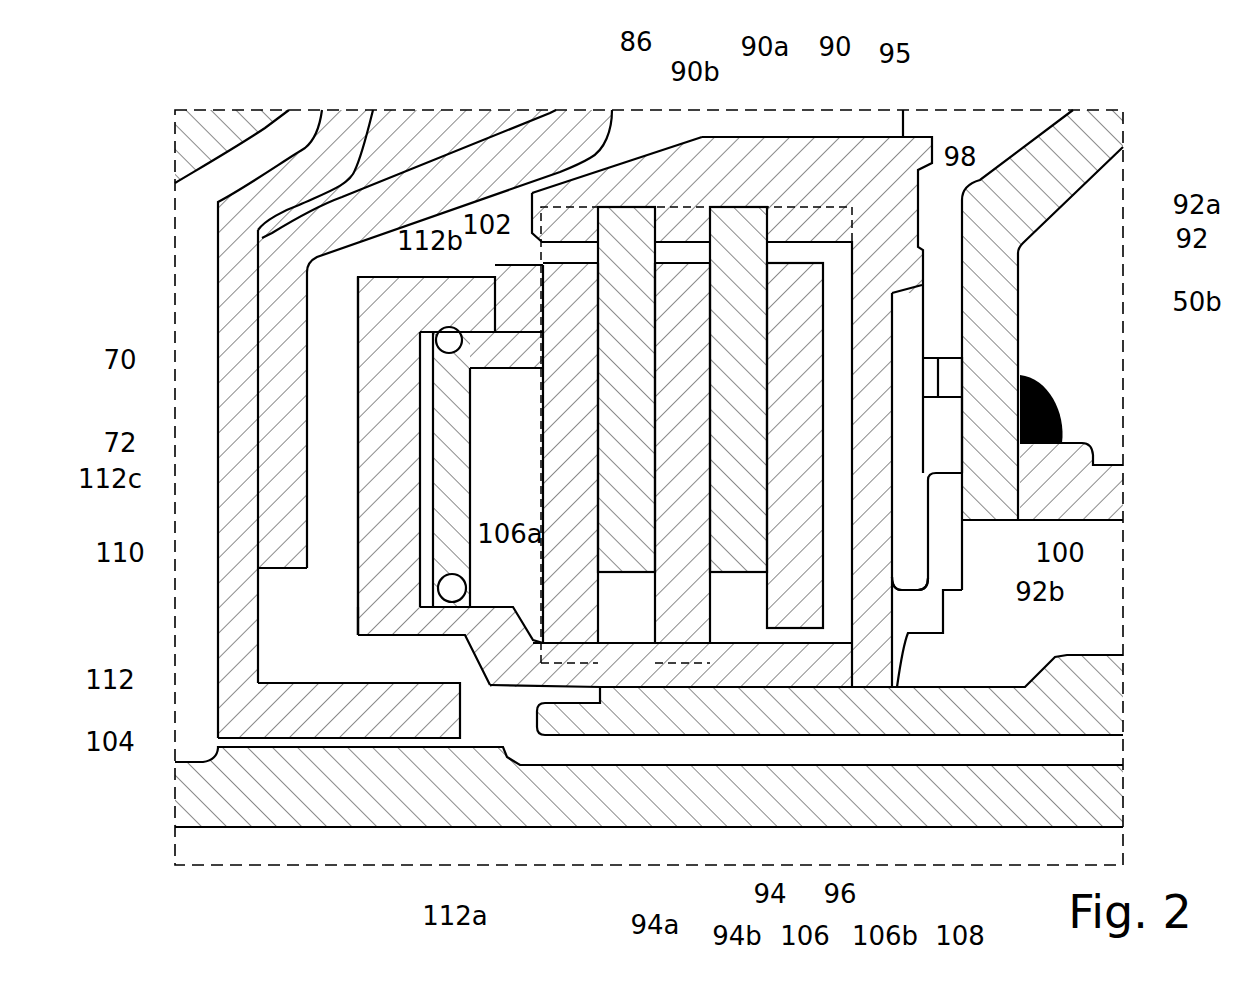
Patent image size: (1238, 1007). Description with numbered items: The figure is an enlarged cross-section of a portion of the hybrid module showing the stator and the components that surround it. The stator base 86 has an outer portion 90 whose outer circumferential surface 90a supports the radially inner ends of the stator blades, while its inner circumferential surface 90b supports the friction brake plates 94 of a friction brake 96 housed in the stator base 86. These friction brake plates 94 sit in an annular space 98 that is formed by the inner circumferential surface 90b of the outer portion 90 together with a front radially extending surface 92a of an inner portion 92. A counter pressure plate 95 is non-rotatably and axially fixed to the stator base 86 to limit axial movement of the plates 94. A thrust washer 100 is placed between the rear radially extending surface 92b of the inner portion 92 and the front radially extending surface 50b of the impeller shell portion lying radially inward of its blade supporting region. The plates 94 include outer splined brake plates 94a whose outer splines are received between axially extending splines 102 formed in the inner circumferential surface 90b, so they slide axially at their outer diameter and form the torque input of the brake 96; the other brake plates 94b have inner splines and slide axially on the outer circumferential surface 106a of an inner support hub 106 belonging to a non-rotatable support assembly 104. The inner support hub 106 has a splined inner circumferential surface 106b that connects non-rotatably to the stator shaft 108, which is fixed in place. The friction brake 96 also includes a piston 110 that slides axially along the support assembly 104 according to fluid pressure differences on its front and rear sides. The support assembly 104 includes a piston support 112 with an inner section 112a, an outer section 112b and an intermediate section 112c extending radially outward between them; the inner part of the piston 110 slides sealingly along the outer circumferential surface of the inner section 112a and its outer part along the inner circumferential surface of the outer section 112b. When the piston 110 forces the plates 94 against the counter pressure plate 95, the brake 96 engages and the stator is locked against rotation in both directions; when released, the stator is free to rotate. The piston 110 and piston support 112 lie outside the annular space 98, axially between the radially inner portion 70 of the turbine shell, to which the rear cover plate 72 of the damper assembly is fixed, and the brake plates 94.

The front radially extending surface 50b is at (963, 378).
The radially inner portion 70 is at (277, 338).
The rear cover plate 72 is at (240, 430).
The stator base 86 is at (640, 60).
The outer portion 90 is at (787, 167).
The outer circumferential surface 90a is at (733, 133).
The inner circumferential surface 90b is at (667, 238).
The inner portion 92 is at (877, 348).
The front radially extending surface 92a is at (852, 327).
The rear radially extending surface 92b is at (1007, 593).
The friction brake plates 94 is at (776, 878).
The outer splined brake plates 94a is at (678, 905).
The brake plates 94b is at (748, 915).
The counter pressure plate 95 is at (800, 280).
The friction brake 96 is at (845, 878).
The annular space 98 is at (963, 170).
The thrust washer 100 is at (1037, 553).
The axially extending splines 102 is at (550, 217).
The non-rotatable support assembly 104 is at (140, 740).
The inner support hub 106 is at (806, 915).
The outer circumferential surface 106a is at (610, 640).
The splined inner circumferential surface 106b is at (887, 915).
The stator shaft 108 is at (965, 915).
The piston 110 is at (460, 457).
The piston support 112 is at (140, 678).
The inner section 112a is at (460, 900).
The outer section 112b is at (447, 297).
The intermediate section 112c is at (390, 405).